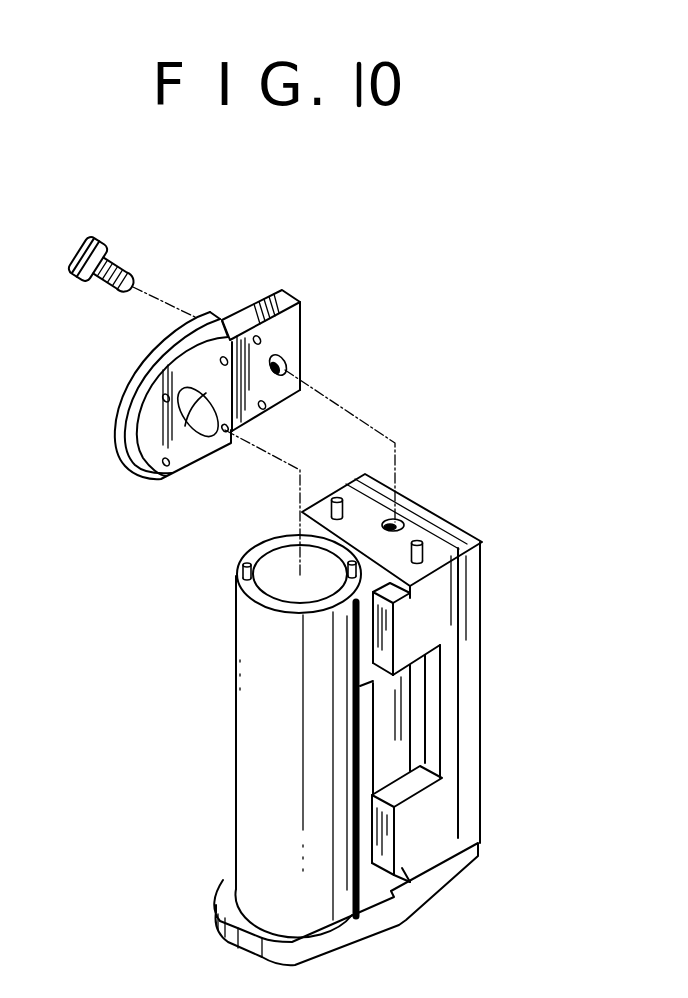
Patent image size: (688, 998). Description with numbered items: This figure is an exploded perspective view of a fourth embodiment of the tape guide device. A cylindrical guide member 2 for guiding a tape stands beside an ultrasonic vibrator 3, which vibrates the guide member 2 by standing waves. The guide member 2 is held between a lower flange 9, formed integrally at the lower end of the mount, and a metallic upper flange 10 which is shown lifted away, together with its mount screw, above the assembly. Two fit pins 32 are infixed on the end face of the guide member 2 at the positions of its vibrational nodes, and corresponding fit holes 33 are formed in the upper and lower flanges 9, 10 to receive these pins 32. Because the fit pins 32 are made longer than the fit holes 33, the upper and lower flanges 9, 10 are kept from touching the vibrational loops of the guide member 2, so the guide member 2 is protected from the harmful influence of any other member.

The guide member 2 is at (245, 782).
The ultrasonic vibrator 3 is at (402, 733).
The lower flange 9 is at (363, 932).
The upper flange 10 is at (300, 322).
The fit pins 32 is at (347, 571).
The fit holes 33 is at (222, 431).